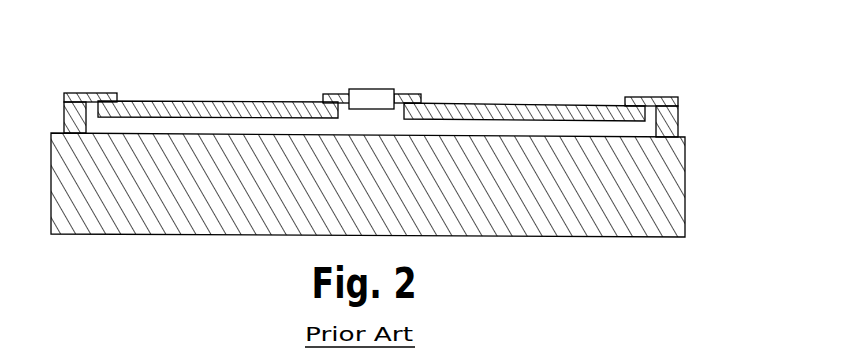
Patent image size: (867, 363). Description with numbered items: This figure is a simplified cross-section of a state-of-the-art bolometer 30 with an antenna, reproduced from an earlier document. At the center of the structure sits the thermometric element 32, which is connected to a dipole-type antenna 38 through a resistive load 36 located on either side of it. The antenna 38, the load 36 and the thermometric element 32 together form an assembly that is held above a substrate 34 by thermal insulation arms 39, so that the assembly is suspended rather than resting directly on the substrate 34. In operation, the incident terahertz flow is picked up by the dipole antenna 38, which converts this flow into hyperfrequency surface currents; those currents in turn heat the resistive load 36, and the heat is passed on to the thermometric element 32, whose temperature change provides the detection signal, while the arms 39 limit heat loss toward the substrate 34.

The bolometer 30 is at (95, 48).
The thermometric element 32 is at (363, 89).
The substrate 34 is at (679, 192).
The resistive load 36 is at (340, 96).
The dipole-type antenna 38 is at (221, 107).
The thermal insulation arms 39 is at (85, 93).